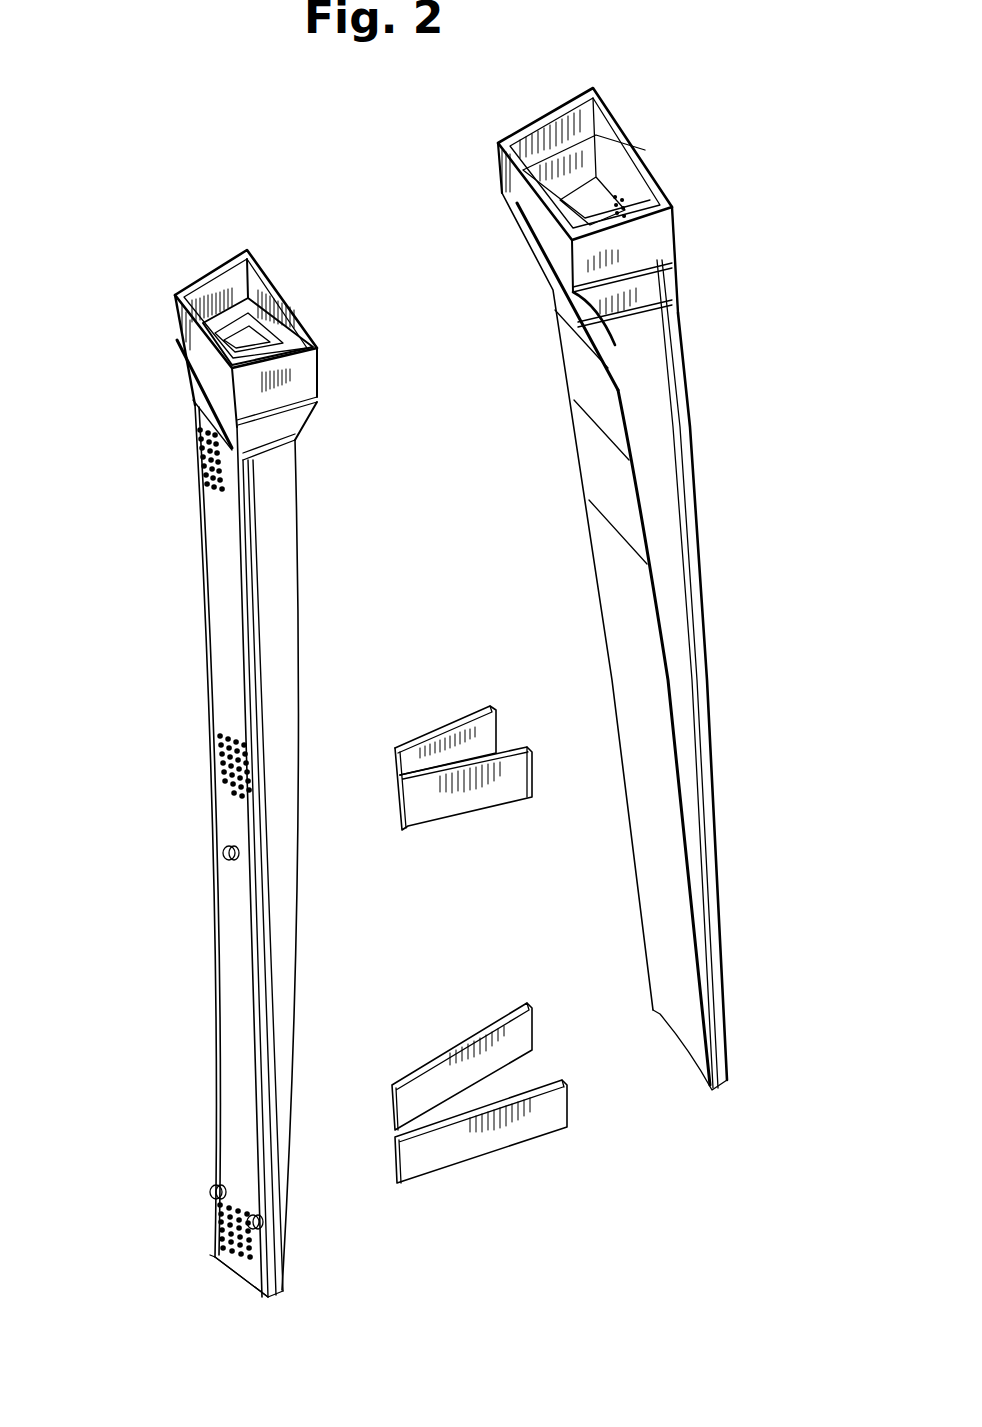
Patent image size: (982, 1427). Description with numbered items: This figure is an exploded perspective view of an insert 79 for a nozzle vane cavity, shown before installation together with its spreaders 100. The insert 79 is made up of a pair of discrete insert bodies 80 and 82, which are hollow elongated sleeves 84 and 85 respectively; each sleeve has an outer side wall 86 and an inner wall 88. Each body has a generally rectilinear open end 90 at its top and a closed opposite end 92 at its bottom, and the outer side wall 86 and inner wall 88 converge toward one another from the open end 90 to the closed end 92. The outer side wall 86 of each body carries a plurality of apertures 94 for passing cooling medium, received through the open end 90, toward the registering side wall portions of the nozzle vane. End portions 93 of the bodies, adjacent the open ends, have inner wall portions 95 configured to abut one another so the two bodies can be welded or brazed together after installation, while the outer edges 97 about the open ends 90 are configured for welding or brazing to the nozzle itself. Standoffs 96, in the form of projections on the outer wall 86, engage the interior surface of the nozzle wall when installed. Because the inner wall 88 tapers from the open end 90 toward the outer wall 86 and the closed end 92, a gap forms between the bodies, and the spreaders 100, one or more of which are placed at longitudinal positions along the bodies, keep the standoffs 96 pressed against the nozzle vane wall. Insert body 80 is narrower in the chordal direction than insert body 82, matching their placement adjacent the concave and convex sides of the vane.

The insert 79 is at (727, 428).
The insert body 80 is at (275, 547).
The insert body 82 is at (680, 348).
The hollow elongated sleeve 84 is at (290, 827).
The hollow elongated sleeve 85 is at (620, 658).
The outer side wall 86 is at (218, 613).
The inner wall 88 is at (287, 1125).
The open end 90 is at (232, 330).
The closed opposite end 92 is at (232, 1270).
The end portion 93 is at (297, 335).
The apertures 94 is at (228, 785).
The inner wall portion 95 is at (280, 297).
The standoffs 96 is at (223, 858).
The outer edges 97 is at (197, 360).
The spreaders 100 is at (420, 800).